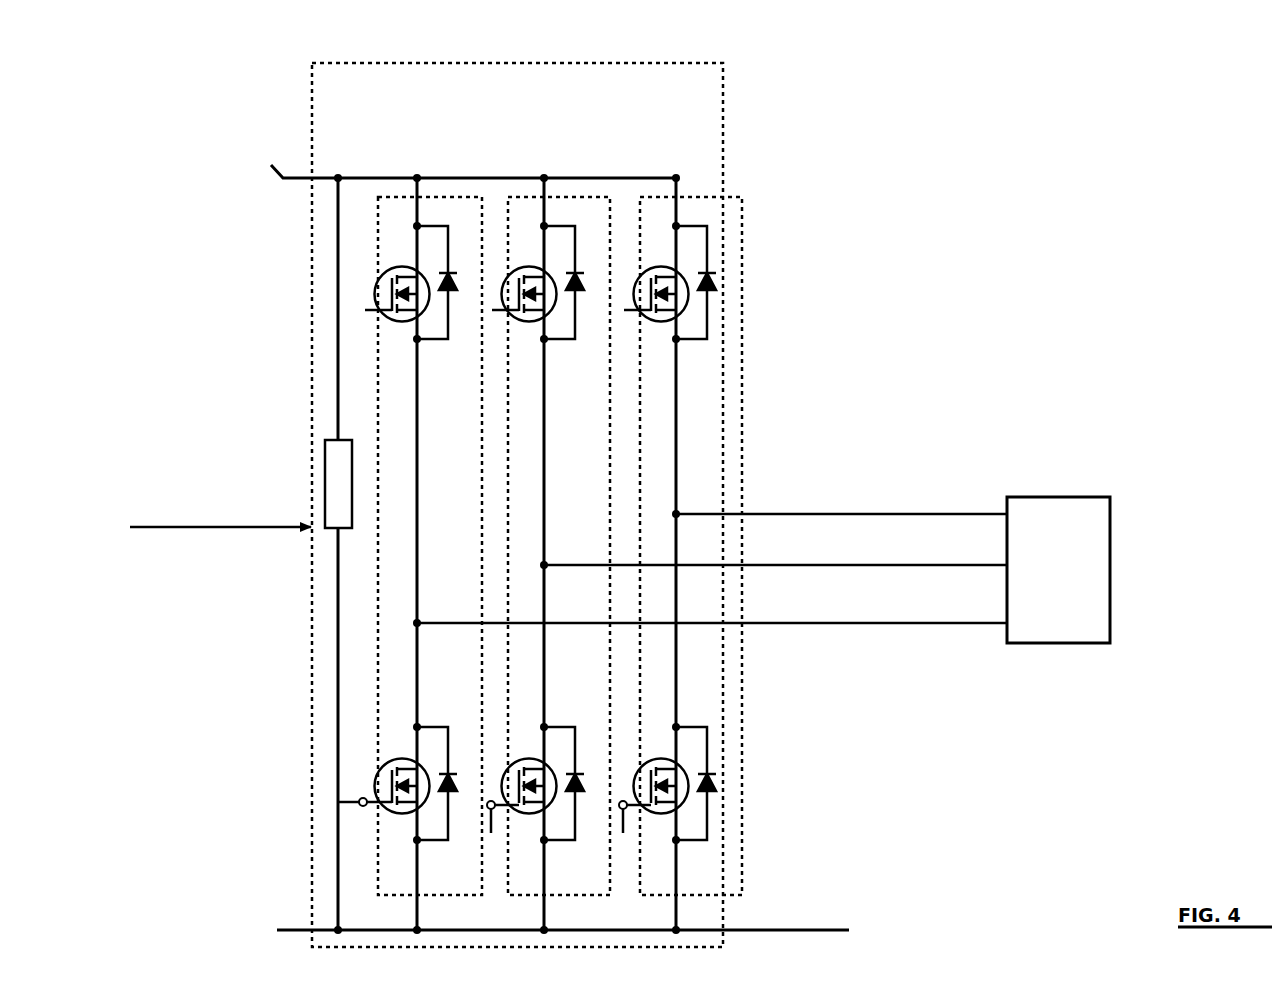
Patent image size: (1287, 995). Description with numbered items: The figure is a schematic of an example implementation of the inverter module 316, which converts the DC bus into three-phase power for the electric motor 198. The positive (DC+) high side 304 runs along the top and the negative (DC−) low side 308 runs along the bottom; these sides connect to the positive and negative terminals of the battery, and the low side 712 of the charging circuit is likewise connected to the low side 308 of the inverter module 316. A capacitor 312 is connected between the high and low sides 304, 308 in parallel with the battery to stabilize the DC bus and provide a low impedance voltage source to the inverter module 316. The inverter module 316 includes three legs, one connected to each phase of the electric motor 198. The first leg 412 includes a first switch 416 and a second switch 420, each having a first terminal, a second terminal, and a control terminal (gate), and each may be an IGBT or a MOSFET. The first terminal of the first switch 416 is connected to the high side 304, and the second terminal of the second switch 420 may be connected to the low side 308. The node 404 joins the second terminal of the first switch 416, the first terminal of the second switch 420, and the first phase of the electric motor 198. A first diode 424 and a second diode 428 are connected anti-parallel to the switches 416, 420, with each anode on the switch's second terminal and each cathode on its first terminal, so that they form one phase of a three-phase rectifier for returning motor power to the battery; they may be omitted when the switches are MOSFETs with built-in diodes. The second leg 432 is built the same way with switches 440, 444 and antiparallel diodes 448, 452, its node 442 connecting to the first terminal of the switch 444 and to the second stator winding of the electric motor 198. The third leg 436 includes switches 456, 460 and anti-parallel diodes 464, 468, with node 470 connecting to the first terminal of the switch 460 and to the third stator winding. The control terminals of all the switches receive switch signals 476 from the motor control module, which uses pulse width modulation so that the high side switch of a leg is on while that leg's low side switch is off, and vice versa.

The inverter module 316 is at (723, 88).
The high side 304 is at (271, 165).
The low side 308 is at (292, 930).
The low side 712 is at (832, 930).
The capacitor 312 is at (326, 470).
The switch signals 476 is at (220, 526).
The first leg 412 is at (430, 197).
The second leg 432 is at (558, 197).
The third leg 436 is at (703, 197).
The first switch 416 is at (388, 262).
The switch 440 is at (528, 250).
The switch 456 is at (663, 252).
The first diode 424 is at (457, 262).
The diode 448 is at (588, 262).
The diode 464 is at (720, 280).
The second switch 420 is at (385, 752).
The switch 444 is at (528, 748).
The switch 460 is at (665, 745).
The second diode 428 is at (458, 750).
The diode 452 is at (585, 757).
The diode 468 is at (718, 780).
The node 470 is at (676, 514).
The node 442 is at (544, 565).
The node 404 is at (417, 623).
The electric motor 198 is at (1058, 643).